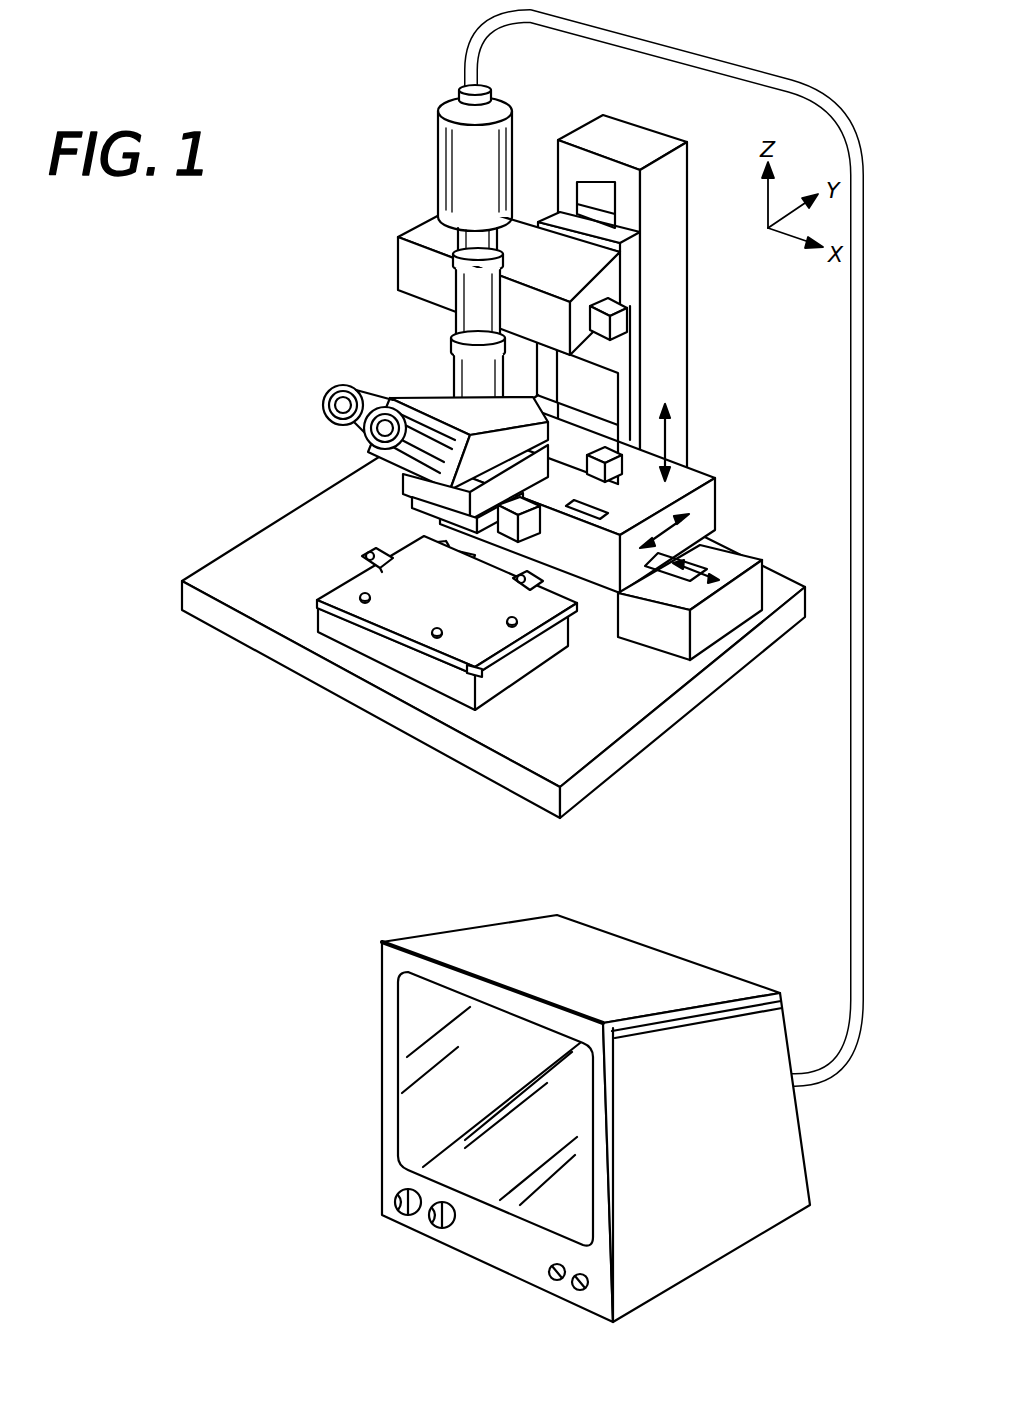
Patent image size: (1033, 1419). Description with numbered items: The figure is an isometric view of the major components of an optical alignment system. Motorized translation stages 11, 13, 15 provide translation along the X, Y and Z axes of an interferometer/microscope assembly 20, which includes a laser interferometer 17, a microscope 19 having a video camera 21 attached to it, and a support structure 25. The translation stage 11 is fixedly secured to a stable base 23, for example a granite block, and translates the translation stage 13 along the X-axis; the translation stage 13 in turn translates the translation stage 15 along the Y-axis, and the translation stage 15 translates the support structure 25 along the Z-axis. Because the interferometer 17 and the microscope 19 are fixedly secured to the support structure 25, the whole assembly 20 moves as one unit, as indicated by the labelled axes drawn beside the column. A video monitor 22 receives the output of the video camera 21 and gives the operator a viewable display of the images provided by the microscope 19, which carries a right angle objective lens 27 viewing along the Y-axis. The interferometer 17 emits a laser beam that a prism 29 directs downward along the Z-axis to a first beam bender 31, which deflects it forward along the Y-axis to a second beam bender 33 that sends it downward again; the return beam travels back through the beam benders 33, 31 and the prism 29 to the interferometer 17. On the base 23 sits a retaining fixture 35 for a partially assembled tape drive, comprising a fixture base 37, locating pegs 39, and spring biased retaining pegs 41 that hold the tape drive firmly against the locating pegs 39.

The motorized translation stage 11 is at (757, 580).
The motorized translation stage 13 is at (712, 500).
The motorized translation stage 15 is at (675, 362).
The laser interferometer 17 is at (410, 262).
The microscope 19 is at (440, 398).
The interferometer/microscope assembly 20 is at (360, 306).
The video camera 21 is at (440, 150).
The video monitor 22 is at (675, 967).
The stable base 23 is at (650, 734).
The support structure 25 is at (555, 222).
The right angle objective lens 27 is at (437, 560).
The prism 29 is at (618, 321).
The first beam bender 31 is at (608, 448).
The second beam bender 33 is at (530, 538).
The retaining fixture 35 is at (338, 554).
The fixture base 37 is at (342, 580).
The locating pegs 39 is at (373, 598).
The spring biased retaining pegs 41 is at (370, 549).